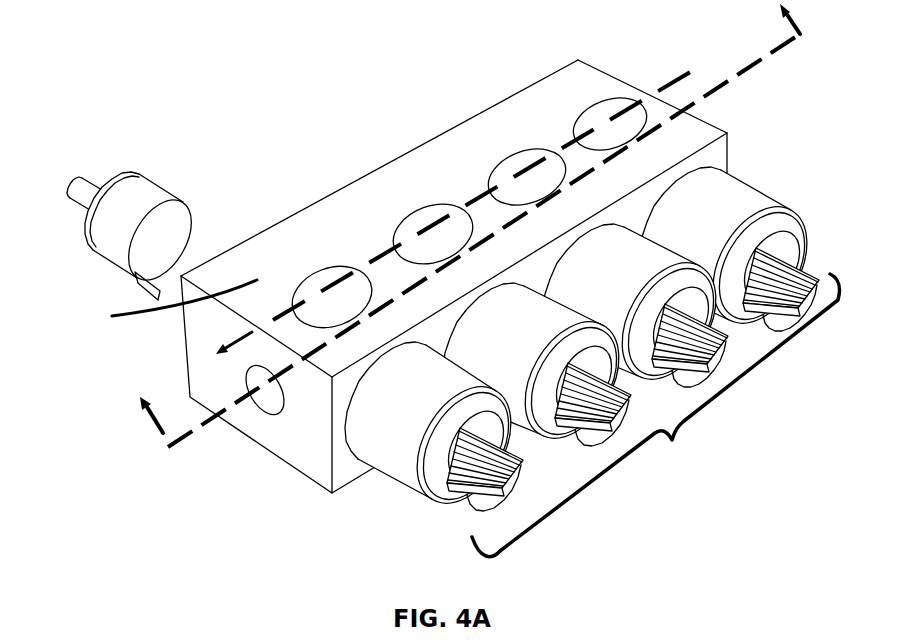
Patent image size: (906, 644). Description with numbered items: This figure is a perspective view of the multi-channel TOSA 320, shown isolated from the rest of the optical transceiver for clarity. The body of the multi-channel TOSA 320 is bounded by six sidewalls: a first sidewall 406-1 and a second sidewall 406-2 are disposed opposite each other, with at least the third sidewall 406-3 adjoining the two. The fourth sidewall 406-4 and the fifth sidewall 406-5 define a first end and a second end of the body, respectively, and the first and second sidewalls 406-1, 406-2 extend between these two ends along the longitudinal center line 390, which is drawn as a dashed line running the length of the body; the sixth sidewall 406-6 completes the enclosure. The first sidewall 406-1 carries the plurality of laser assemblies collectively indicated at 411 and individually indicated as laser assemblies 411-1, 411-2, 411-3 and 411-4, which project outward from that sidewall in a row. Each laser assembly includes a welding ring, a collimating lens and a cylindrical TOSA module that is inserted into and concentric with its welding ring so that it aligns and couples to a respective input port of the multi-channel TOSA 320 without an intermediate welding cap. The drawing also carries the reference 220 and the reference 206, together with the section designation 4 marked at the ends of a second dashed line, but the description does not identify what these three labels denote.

The multi-channel TOSA 320 is at (454, 276).
The cylindrical inlet fitting 220 is at (125, 194).
The fluid flow path 206 is at (168, 302).
The longitudinal center line 390 is at (697, 69).
The first sidewall 406-1 is at (718, 157).
The second sidewall 406-2 is at (232, 247).
The third sidewall 406-3 is at (384, 303).
The fourth sidewall 406-4 is at (203, 377).
The fifth sidewall 406-5 is at (637, 85).
The sixth sidewall 406-6 is at (293, 463).
The laser assemblies 411 is at (592, 362).
The laser assembly 411-1 is at (716, 228).
The laser assembly 411-2 is at (637, 280).
The laser assembly 411-3 is at (532, 341).
The laser assembly 411-4 is at (422, 415).
The section line 4- 4 is at (479, 241).